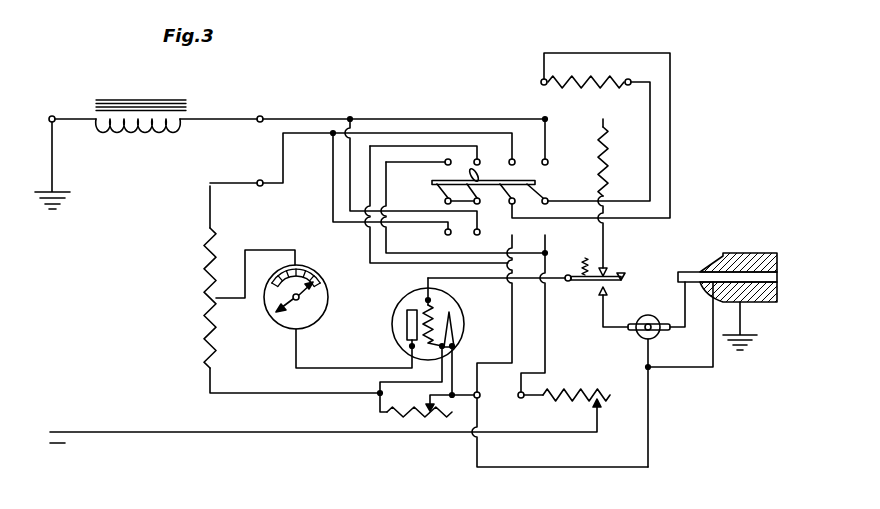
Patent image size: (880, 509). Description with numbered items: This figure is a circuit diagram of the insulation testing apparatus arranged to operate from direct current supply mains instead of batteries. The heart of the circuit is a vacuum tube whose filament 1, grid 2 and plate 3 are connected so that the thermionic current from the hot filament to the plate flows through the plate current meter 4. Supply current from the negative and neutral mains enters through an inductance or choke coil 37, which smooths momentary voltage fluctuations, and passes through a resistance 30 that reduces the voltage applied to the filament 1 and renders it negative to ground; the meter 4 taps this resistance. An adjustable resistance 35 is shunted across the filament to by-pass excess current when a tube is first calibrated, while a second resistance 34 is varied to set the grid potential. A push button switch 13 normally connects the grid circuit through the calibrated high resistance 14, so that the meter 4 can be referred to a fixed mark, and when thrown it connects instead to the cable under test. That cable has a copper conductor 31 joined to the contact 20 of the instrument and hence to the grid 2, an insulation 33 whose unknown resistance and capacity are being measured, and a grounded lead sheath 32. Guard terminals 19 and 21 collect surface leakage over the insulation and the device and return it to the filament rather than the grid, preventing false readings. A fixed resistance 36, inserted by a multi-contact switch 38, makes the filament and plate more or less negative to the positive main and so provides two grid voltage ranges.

The filament 1 is at (455, 332).
The grid 2 is at (432, 313).
The plate 3 is at (405, 325).
The plate current meter 4 is at (322, 301).
The push button switch 13 is at (625, 270).
The calibrated high resistance 14 is at (607, 168).
The guard terminals 19 is at (707, 264).
The contact 20 is at (649, 324).
The guard terminal 21 is at (653, 345).
The resistance 30 is at (204, 329).
The copper conductor 31 is at (735, 277).
The lead sheath 32 is at (758, 303).
The insulation 33 is at (730, 254).
The resistance 34 is at (561, 403).
The adjustable resistance 35 is at (402, 417).
The fixed resistance 36 is at (588, 80).
The inductance or choke coil 37 is at (186, 110).
The switch 38 is at (488, 181).